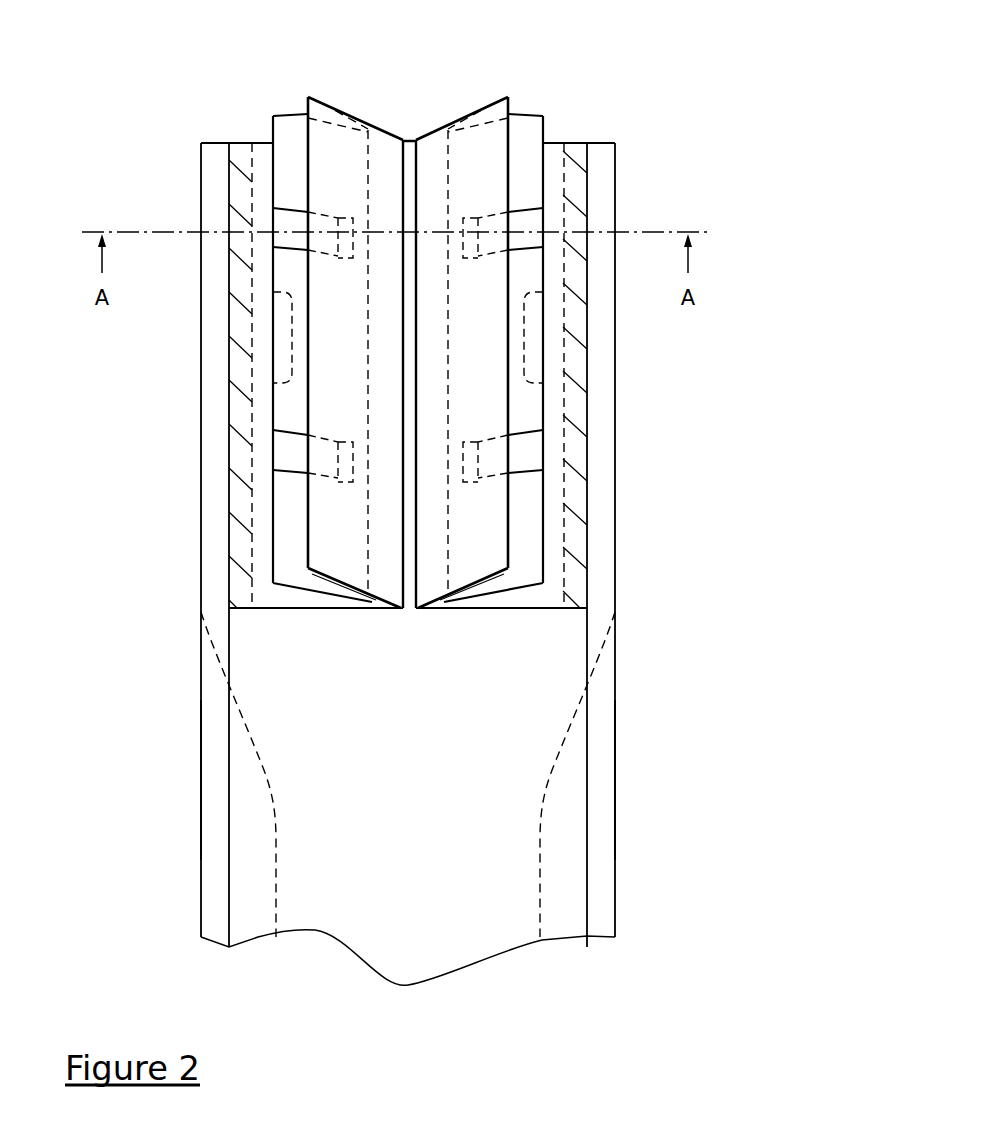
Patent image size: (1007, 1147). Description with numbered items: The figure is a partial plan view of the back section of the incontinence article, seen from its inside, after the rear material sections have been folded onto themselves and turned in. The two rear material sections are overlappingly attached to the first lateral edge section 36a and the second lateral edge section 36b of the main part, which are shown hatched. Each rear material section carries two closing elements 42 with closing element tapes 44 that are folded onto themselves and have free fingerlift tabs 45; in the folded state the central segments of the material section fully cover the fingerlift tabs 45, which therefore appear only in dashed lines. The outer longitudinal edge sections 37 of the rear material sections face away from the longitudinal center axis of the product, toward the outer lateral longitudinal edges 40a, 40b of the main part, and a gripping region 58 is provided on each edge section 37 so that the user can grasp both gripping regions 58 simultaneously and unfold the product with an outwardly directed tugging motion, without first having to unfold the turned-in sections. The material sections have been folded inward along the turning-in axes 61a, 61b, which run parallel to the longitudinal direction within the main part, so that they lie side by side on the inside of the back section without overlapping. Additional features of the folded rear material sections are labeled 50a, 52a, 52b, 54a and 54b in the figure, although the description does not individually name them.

The first lateral edge section 36a is at (238, 598).
The second lateral edge section 36b is at (580, 595).
The outer longitudinal edge section 37 is at (526, 102).
The outer lateral longitudinal edge 40a is at (229, 680).
The outer lateral longitudinal edge 40b is at (587, 677).
The closing element 42 is at (415, 307).
The closing element tape 44 is at (638, 473).
The free fingerlift tab 45 is at (471, 480).
The fold line 50a is at (371, 604).
The first plate 52a is at (308, 97).
The second plate 52b is at (507, 97).
The first edge 54a is at (403, 608).
The second edge 54b is at (414, 608).
The gripping region 58 is at (643, 342).
The turning-in axis 61a is at (200, 778).
The turning-in axis 61b is at (615, 745).